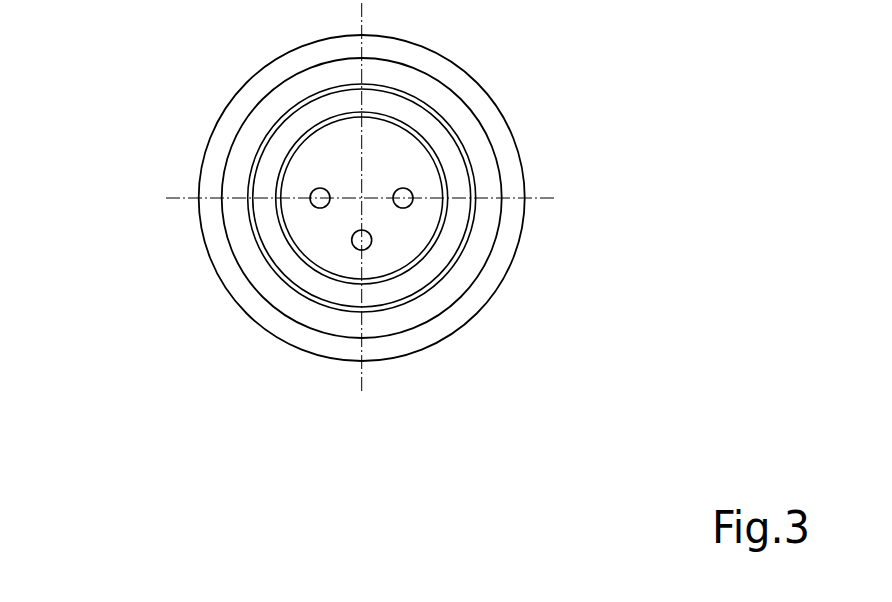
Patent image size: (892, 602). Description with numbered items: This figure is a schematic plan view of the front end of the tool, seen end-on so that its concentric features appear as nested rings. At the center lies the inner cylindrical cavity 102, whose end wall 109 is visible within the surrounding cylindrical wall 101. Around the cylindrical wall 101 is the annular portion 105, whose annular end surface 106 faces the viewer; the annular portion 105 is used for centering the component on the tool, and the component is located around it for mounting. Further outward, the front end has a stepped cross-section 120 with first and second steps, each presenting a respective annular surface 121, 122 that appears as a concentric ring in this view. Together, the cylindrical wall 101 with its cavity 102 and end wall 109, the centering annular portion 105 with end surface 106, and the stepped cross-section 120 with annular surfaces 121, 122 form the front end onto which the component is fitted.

The cylindrical wall 101 is at (243, 229).
The inner cylindrical cavity 102 is at (397, 250).
The annular portion 105 is at (272, 268).
The annular end surface 106 is at (435, 137).
The end wall 109 is at (312, 157).
The stepped cross-section 120 is at (512, 270).
The annular surface 121 is at (483, 173).
The annular surface 122 is at (512, 225).